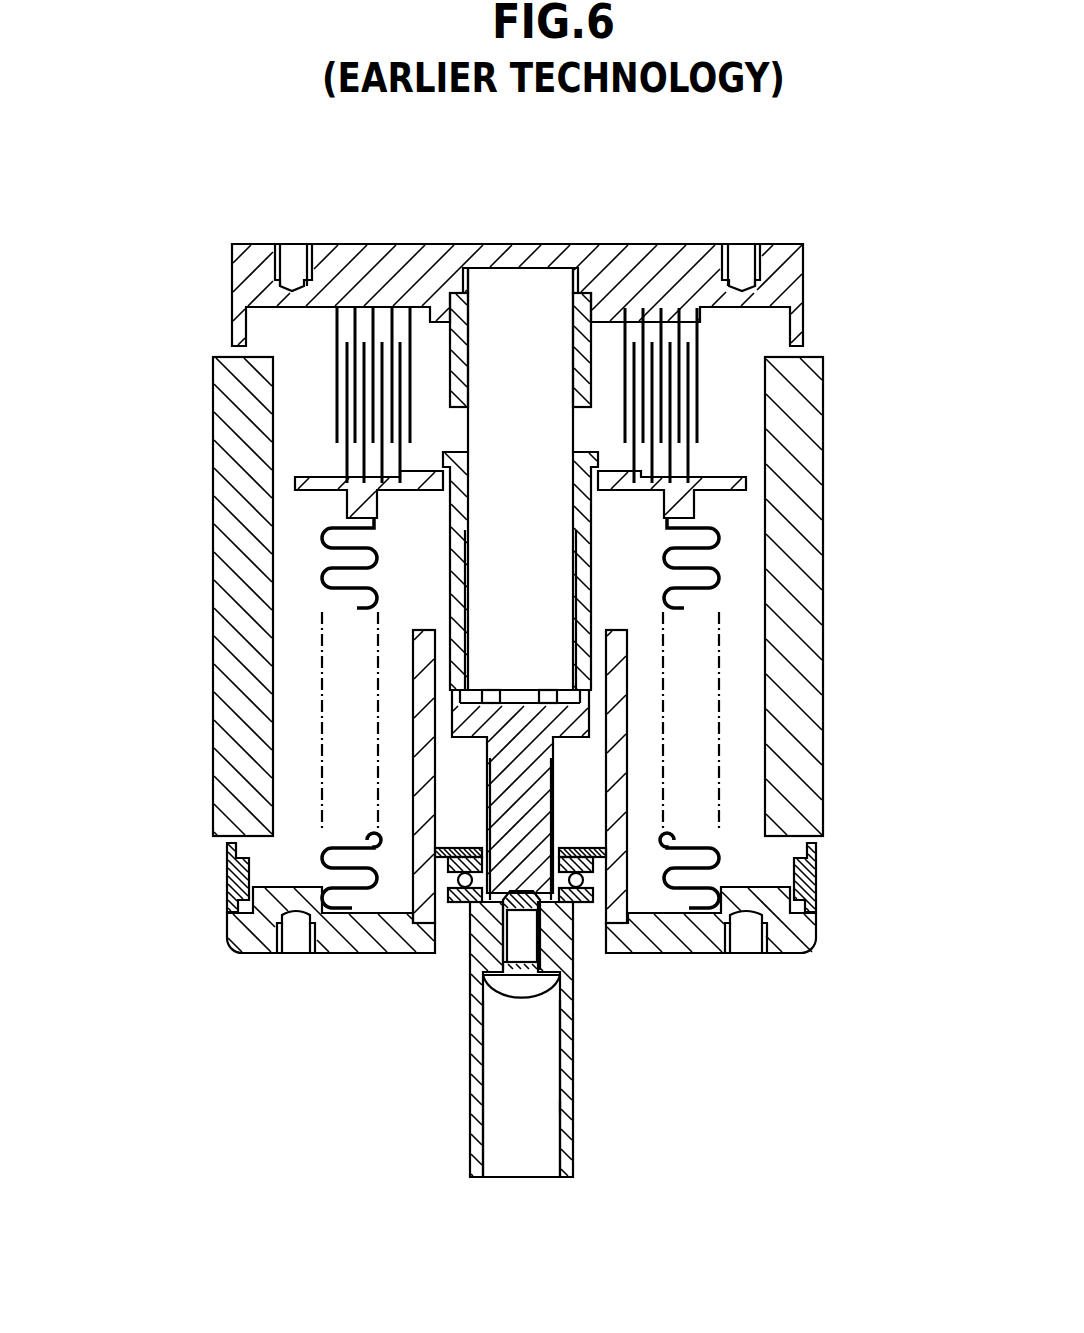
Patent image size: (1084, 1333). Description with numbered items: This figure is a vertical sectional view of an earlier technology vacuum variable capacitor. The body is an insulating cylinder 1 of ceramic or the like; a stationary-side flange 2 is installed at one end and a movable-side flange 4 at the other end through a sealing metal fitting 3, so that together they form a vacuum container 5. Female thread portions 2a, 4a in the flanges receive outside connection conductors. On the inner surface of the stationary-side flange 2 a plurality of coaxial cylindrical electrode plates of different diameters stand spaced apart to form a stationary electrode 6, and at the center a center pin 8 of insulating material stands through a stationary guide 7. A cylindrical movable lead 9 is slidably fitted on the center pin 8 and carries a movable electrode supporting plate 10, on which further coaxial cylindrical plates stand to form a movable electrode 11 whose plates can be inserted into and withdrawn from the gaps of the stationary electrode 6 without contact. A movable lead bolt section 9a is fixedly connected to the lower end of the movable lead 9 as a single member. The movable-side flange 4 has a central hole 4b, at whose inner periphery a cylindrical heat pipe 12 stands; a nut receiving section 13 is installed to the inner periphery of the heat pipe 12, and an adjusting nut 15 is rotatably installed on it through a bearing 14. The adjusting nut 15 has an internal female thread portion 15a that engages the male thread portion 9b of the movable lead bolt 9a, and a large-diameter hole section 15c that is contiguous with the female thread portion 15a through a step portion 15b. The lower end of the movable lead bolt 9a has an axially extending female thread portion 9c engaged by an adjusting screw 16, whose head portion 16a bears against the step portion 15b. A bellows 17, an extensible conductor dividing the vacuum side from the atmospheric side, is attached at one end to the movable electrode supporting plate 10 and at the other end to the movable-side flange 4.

The insulating cylinder 1 is at (556, 596).
The stationary-side flange 2 is at (517, 253).
The female thread portion 2a is at (517, 227).
The sealing metal fitting 3 is at (198, 877).
The movable-side flange 4 is at (521, 958).
The female thread portion 4a is at (291, 979).
The hole 4b is at (683, 960).
The vacuum container 5 is at (866, 574).
The stationary electrode 6 is at (439, 379).
The stationary guide 7 is at (671, 336).
The center pin 8 is at (670, 479).
The movable lead 9 is at (432, 672).
The movable lead bolt section 9a is at (358, 791).
The male thread portion 9b is at (702, 796).
The female thread portion 9c is at (467, 942).
The movable electrode supporting plate 10 is at (287, 463).
The movable electrode 11 is at (755, 467).
The heat pipe 12 is at (306, 776).
The nut receiving section 13 is at (754, 776).
The bearing 14 is at (737, 860).
The adjusting nut 15 is at (571, 1039).
The female thread portion 15a is at (465, 1027).
The step portion 15b is at (596, 1009).
The large-diameter hole section 15c is at (624, 1110).
The adjusting screw 16 is at (558, 1135).
The head portion 16a is at (491, 1135).
The bellows 17 is at (433, 858).